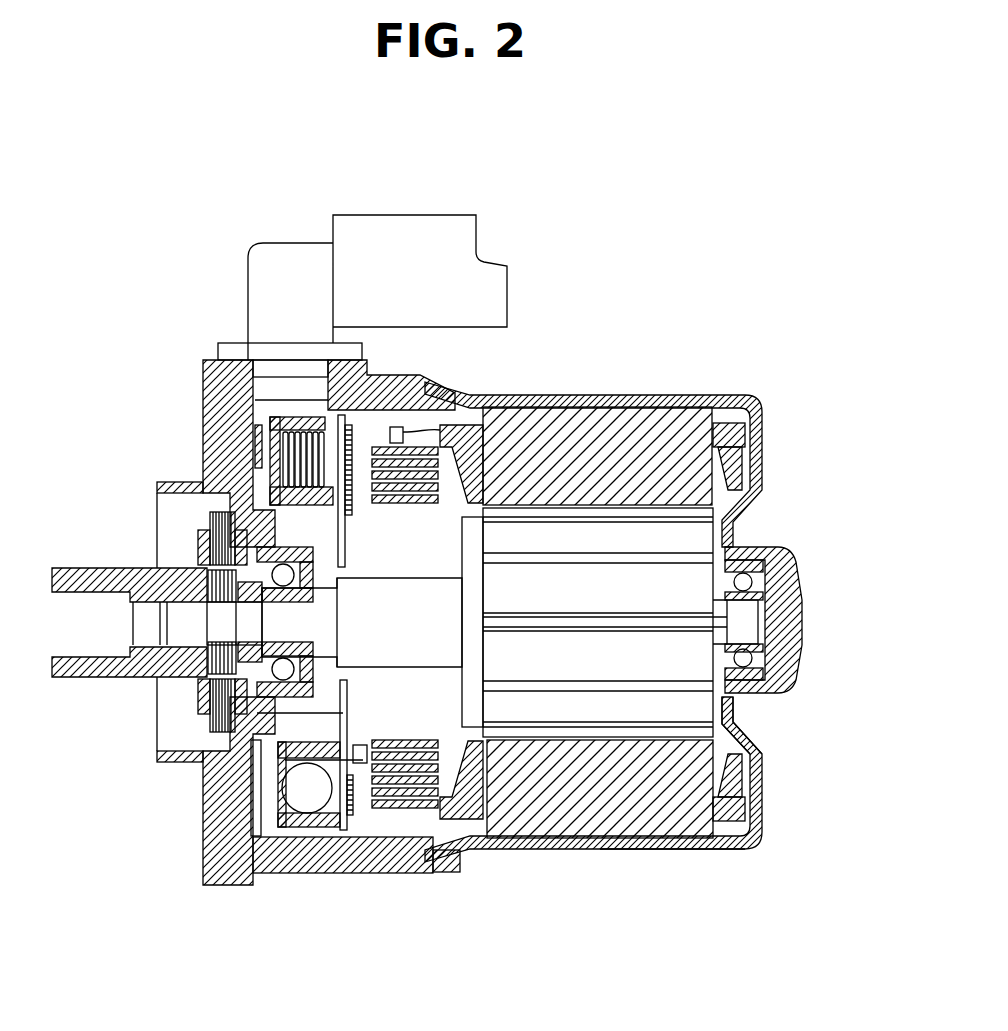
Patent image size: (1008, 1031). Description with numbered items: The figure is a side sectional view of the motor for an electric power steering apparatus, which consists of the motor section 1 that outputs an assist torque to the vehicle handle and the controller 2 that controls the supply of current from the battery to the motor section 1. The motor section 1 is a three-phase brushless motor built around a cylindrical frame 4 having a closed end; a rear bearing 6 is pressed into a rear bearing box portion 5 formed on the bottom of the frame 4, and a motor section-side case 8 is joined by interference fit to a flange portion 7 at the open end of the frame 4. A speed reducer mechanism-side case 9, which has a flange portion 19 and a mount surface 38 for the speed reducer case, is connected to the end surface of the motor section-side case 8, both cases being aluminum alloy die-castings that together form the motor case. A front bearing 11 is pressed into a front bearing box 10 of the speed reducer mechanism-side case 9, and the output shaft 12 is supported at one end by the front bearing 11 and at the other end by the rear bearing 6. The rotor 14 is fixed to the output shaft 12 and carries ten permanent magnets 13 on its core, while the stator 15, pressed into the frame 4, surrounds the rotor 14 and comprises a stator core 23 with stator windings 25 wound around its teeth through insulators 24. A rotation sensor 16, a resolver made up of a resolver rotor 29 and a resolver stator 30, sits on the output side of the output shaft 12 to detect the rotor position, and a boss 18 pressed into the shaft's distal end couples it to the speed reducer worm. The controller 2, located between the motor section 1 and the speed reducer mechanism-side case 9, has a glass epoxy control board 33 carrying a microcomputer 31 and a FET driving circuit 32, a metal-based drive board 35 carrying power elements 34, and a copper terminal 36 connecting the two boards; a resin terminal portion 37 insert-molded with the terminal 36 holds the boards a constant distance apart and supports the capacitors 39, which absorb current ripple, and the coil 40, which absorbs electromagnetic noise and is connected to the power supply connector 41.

The motor section 1 is at (657, 858).
The controller 2 is at (390, 420).
The frame 4 is at (693, 857).
The rear bearing box portion 5 is at (752, 697).
The rear bearing 6 is at (755, 550).
The flange portion 7 is at (455, 845).
The motor section-side case 8 is at (393, 875).
The speed reducer mechanism-side case 9 is at (205, 860).
The front bearing box 10 is at (303, 533).
The front bearing 11 is at (307, 562).
The output shaft 12 is at (407, 652).
The permanent magnets 13 is at (610, 662).
The rotor 14 is at (652, 533).
The stator 15 is at (573, 440).
The rotation sensor 16 is at (203, 577).
The boss 18 is at (97, 680).
The flange portion 19 is at (168, 765).
The stator core 23 is at (545, 822).
The insulators 24 is at (748, 428).
The stator windings 25 is at (735, 458).
The resolver rotor 29 is at (207, 668).
The resolver stator 30 is at (205, 528).
The microcomputer 31 is at (365, 418).
The FET driving circuit 32 is at (357, 766).
The control board 33 is at (347, 812).
The power elements 34 is at (256, 445).
The drive board 35 is at (252, 480).
The terminal 36 is at (433, 872).
The terminal portion 37 is at (290, 828).
The mount surface 38 is at (203, 380).
The capacitors 39 is at (306, 805).
The coil 40 is at (300, 450).
The power supply connector 41 is at (462, 240).